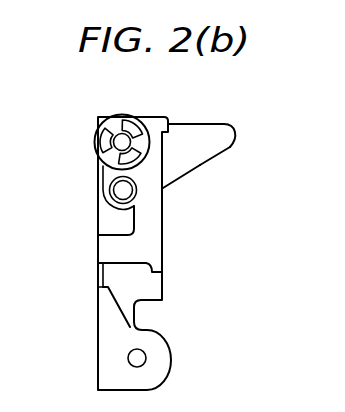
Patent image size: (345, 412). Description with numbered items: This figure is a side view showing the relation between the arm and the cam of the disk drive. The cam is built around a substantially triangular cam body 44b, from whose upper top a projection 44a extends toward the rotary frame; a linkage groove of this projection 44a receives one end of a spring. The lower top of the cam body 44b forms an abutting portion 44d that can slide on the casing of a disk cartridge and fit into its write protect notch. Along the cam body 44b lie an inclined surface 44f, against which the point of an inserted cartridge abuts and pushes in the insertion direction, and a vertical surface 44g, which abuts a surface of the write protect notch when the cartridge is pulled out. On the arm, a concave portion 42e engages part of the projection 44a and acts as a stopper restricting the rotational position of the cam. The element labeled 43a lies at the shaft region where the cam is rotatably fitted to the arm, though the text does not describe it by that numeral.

The concave portion 42e is at (133, 223).
The rotary wheel 43a is at (122, 117).
The projection 44a is at (109, 194).
The vertical surface 44g is at (202, 123).
The abutting portion 44d is at (238, 132).
The inclined surface 44f is at (229, 151).
The cam body 44b is at (199, 164).